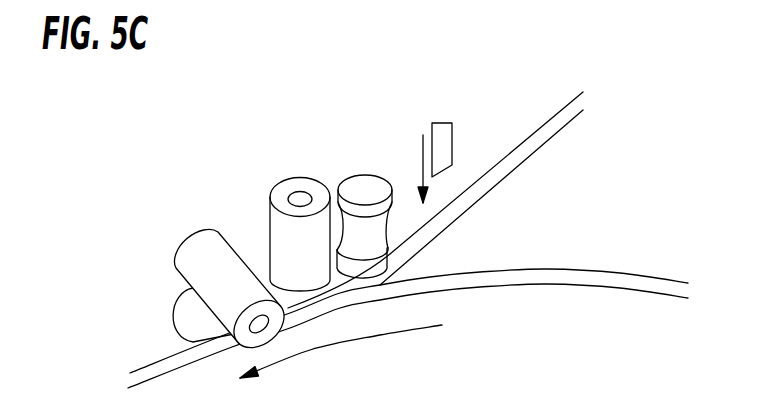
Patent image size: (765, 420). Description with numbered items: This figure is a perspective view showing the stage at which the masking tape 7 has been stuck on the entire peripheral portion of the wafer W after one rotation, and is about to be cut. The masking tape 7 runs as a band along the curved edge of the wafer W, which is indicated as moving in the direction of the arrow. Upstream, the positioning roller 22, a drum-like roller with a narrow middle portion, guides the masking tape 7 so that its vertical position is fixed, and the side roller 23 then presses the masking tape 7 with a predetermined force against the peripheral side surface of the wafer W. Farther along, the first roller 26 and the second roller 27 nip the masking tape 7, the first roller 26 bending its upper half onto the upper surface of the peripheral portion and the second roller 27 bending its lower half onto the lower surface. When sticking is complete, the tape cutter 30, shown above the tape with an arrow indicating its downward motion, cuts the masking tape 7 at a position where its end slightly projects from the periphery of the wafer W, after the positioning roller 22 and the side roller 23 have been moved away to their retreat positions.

The masking tape 7 is at (557, 117).
The positioning roller 22 is at (362, 175).
The side roller 23 is at (293, 178).
The first roller 26 is at (213, 253).
The second roller 27 is at (187, 310).
The tape cutter 30 is at (442, 123).
The wafer W is at (663, 277).